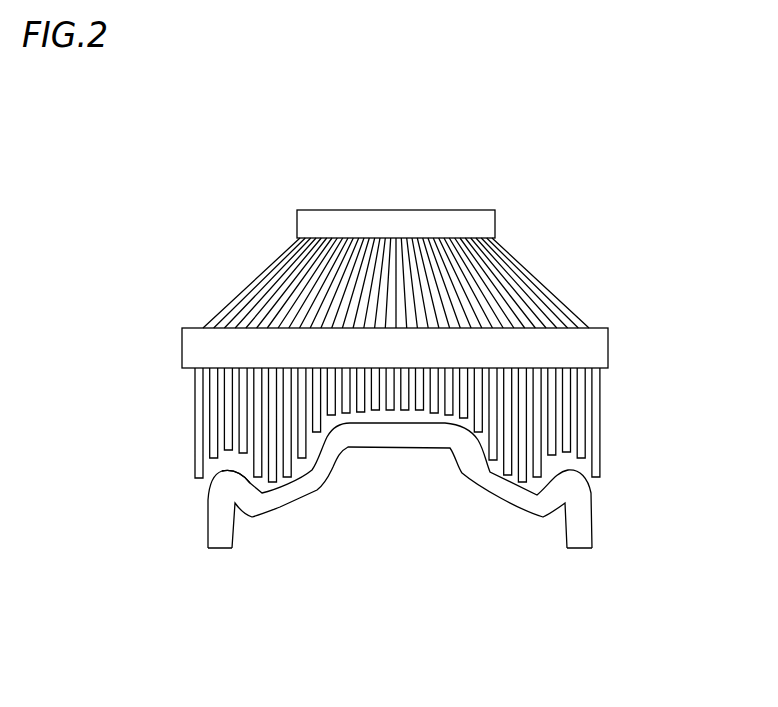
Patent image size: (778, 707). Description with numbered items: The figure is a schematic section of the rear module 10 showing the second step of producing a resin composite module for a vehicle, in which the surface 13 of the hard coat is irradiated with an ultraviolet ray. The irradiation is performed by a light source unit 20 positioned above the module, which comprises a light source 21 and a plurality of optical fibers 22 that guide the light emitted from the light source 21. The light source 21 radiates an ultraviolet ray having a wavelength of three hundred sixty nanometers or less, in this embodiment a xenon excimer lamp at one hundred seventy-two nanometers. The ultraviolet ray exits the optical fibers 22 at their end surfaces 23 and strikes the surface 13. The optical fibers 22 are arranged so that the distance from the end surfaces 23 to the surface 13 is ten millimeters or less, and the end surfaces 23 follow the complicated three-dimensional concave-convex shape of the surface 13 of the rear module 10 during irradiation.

The rear module 10 is at (420, 485).
The surface of the hard coat 13 is at (218, 471).
The light source unit 20 is at (439, 353).
The light source 21 is at (497, 222).
The optical fibers 22 is at (602, 410).
The end surfaces 23 is at (582, 460).